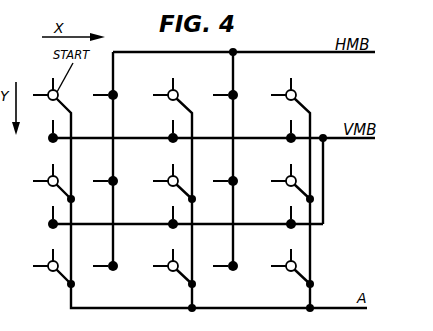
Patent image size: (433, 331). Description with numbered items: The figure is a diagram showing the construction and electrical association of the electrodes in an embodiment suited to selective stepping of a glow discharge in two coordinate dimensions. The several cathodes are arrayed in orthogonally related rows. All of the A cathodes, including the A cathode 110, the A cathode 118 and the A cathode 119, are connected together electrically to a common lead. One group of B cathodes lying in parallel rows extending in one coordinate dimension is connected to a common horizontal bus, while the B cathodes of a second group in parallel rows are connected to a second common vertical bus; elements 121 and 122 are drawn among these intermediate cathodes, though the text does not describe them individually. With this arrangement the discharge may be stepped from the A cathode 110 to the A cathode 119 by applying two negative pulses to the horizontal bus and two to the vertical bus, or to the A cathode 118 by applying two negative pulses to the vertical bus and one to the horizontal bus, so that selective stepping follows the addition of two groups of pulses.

The A cathode 110 is at (45, 84).
The A cathode 118 is at (170, 274).
The A cathode 119 is at (288, 273).
The connection point element 121 is at (49, 141).
The connection point element 122 is at (115, 90).